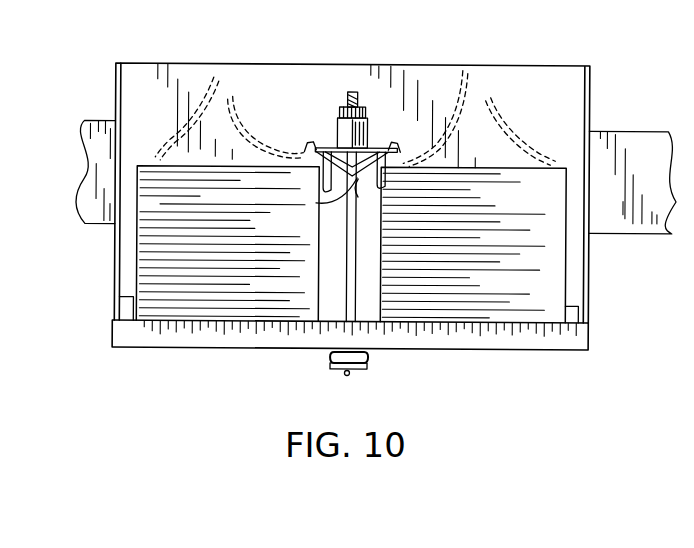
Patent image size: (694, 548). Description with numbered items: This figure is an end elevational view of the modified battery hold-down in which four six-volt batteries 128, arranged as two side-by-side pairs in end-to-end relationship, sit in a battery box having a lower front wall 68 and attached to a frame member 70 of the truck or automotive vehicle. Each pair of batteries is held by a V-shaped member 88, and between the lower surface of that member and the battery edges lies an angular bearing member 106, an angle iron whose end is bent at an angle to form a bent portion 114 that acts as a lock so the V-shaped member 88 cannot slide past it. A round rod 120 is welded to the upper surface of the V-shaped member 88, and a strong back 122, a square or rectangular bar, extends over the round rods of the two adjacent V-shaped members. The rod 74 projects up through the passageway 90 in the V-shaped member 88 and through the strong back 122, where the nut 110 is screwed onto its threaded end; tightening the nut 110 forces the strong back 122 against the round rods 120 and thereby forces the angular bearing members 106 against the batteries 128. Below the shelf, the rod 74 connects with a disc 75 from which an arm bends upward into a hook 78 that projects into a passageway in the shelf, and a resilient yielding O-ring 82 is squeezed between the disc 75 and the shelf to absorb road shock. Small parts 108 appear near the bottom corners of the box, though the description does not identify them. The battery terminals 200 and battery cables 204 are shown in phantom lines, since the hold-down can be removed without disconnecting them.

The lower front wall 68 is at (512, 349).
The frame member 70 is at (641, 233).
The rod 74 is at (347, 302).
The disc 75 is at (368, 363).
The hook 78 is at (348, 377).
The resilient yielding means (O-ring or bushing) 82 is at (332, 358).
The V-shaped member 88 is at (304, 148).
The passageway 90 is at (370, 198).
The angular bearing member 106 is at (317, 196).
The support block 108 is at (130, 300).
The nut 110 is at (347, 92).
The bent portion 114 is at (408, 122).
The round rod 120 is at (333, 147).
The strong back 122 is at (339, 112).
The 6 volt batteries 128 is at (300, 235).
The battery terminals 200 is at (298, 118).
The battery cables 204 is at (343, 129).